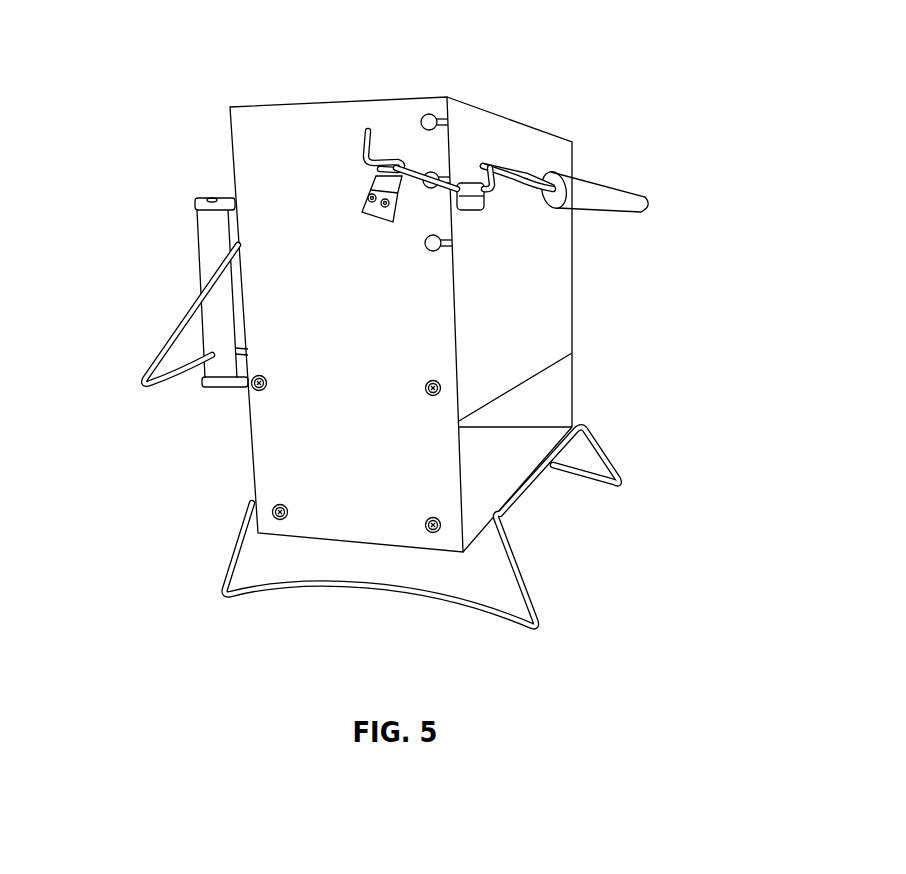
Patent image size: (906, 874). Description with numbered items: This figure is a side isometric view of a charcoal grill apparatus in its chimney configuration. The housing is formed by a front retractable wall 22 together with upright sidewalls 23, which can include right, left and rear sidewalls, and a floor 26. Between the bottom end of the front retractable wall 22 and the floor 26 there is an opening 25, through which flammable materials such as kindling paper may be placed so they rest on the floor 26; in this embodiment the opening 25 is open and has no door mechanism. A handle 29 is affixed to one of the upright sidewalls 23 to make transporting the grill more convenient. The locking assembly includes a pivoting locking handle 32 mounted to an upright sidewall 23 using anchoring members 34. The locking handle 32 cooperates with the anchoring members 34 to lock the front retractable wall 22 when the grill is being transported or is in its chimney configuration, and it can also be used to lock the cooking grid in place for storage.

The front retractable wall 22 is at (550, 140).
The upright sidewalls 23 is at (333, 383).
The opening 25 is at (537, 408).
The floor 26 is at (517, 443).
The handle 29 is at (217, 228).
The pivoting locking handle 32 is at (625, 197).
The anchoring members 34 is at (375, 178).